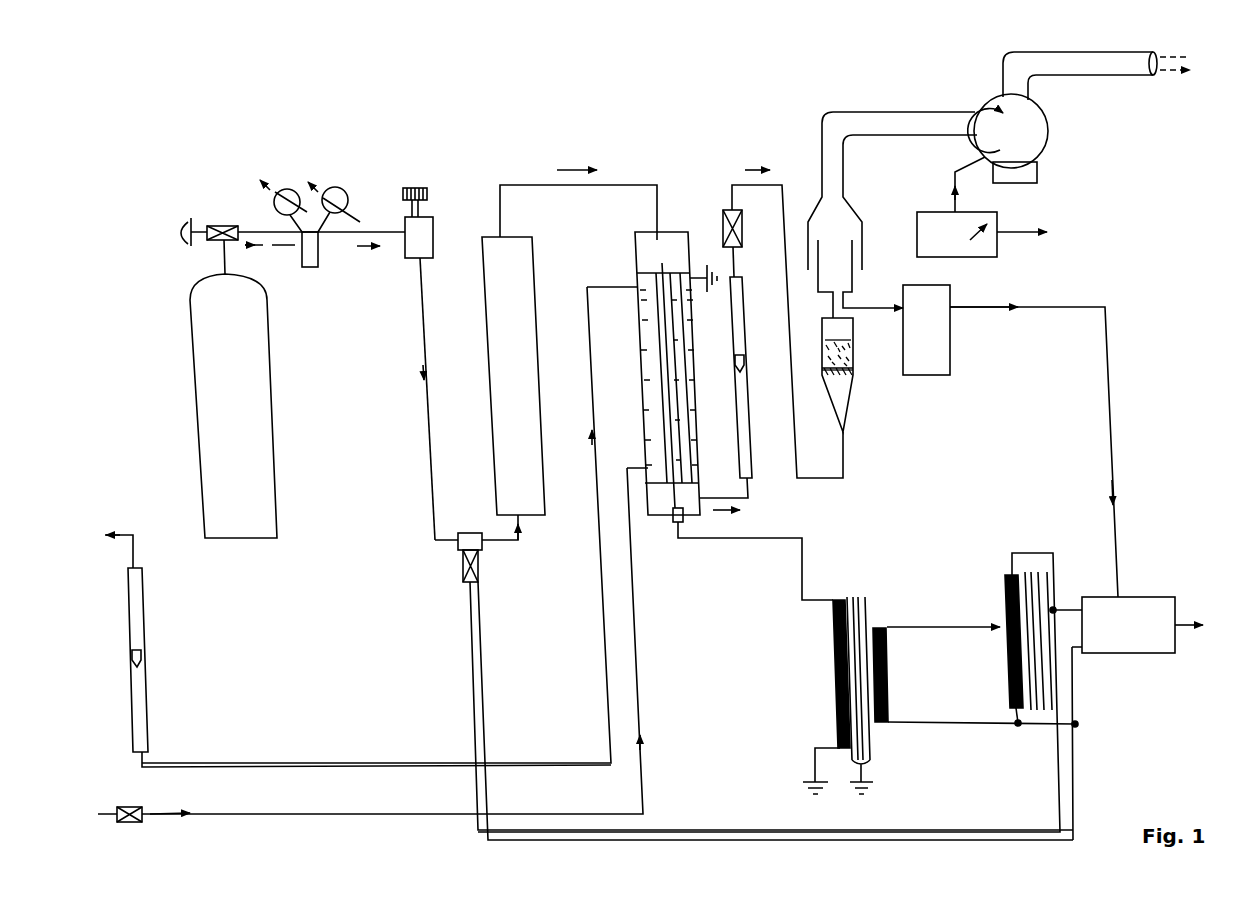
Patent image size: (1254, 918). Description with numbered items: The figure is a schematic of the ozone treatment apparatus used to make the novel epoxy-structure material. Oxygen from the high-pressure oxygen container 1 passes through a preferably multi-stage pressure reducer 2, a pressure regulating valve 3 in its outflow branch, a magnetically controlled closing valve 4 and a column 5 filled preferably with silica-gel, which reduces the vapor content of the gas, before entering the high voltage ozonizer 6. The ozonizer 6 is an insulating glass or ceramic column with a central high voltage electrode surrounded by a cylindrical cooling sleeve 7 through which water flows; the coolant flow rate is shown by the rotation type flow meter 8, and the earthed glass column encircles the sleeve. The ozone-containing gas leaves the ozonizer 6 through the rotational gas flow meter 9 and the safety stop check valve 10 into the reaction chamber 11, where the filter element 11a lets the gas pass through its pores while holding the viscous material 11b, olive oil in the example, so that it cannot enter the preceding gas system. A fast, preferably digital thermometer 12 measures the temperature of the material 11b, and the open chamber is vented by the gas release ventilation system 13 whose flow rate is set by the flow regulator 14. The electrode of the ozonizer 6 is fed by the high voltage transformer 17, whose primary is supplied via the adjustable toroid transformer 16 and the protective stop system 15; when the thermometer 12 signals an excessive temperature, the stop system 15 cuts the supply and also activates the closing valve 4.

The oxygen container 1 is at (201, 412).
The pressure reducer 2 is at (312, 268).
The pressure regulating valve 3 is at (414, 190).
The closing valve 4 is at (462, 570).
The column 5 is at (490, 411).
The ozonizer 6 is at (671, 232).
The cooling sleeve 7 is at (652, 407).
The flow meter 8 is at (147, 663).
The gas flow meter 9 is at (735, 418).
The safety stop check valve 10 is at (743, 232).
The reaction chamber 11 is at (867, 377).
The filter element 11a is at (840, 378).
The material 11b is at (856, 360).
The thermometer 12 is at (950, 347).
The gas release ventilation system 13 is at (849, 160).
The flow regulator 14 is at (985, 258).
The protective stop system 15 is at (1148, 607).
The toroid transformer 16 is at (1002, 597).
The high voltage transformer 17 is at (852, 592).